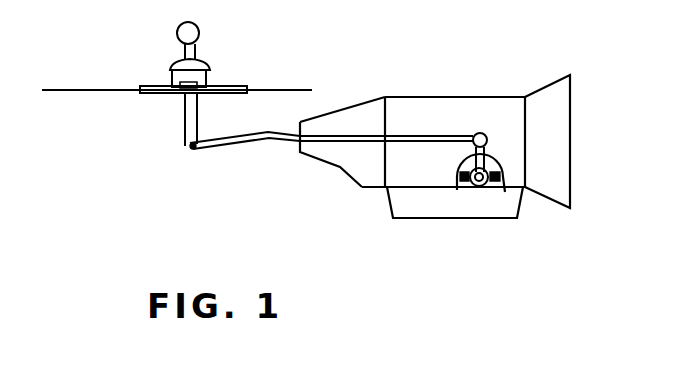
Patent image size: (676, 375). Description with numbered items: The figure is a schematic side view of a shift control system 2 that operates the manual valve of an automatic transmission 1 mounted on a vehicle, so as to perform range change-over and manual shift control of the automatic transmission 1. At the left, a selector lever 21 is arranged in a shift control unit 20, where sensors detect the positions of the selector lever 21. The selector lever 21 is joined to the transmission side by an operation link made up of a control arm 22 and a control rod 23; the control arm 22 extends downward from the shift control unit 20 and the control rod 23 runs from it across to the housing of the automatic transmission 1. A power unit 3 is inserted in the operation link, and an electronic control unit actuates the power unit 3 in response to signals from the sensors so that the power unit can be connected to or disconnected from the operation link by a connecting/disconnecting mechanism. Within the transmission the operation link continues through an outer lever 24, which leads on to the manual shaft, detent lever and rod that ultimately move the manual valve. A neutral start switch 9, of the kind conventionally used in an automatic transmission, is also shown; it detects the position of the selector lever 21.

The automatic transmission 1 is at (473, 113).
The shift control system 2 is at (303, 116).
The power unit 3 is at (480, 186).
The neutral start switch 9 is at (457, 190).
The shift control unit 20 is at (210, 64).
The selector lever 21 is at (183, 51).
The control arm 22 is at (188, 133).
The control rod 23 is at (270, 143).
The outer lever 24 is at (505, 192).